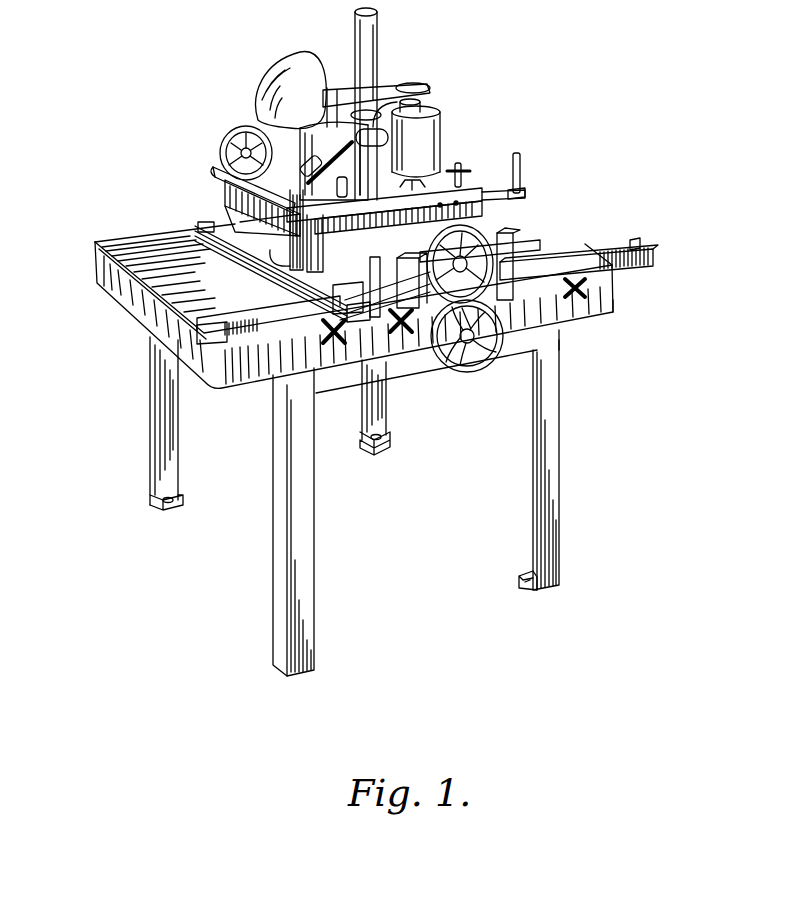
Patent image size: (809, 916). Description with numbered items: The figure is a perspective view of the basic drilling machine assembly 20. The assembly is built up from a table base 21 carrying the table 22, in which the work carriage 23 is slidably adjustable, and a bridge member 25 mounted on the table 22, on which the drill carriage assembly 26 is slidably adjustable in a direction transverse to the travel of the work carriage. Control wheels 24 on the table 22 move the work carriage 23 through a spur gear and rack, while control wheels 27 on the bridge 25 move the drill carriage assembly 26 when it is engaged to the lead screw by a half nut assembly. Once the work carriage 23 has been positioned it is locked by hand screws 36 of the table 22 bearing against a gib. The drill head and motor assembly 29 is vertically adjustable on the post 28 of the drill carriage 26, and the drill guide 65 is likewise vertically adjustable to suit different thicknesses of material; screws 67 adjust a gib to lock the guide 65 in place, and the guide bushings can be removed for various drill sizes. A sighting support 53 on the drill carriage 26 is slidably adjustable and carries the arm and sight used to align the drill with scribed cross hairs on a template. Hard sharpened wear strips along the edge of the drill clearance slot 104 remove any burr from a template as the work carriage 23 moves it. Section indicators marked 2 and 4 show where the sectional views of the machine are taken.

The section line 2- 2 is at (150, 226).
The section line 4- 4 is at (340, 287).
The drilling machine assembly 20 is at (571, 355).
The table base 21 is at (275, 434).
The table 22 is at (135, 298).
The work carriage 23 is at (655, 250).
The control wheels 24 is at (476, 370).
The bridge member 25 is at (215, 170).
The drill carriage assembly 26 is at (468, 185).
The control wheels 27 is at (238, 136).
The post 28 is at (380, 18).
The drill head and motor assembly 29 is at (286, 122).
The hand screws 36 is at (612, 286).
The sighting support 53 is at (528, 195).
The drill guide 65 is at (250, 260).
The screws 67 is at (322, 258).
The drill clearance slot 104 is at (204, 226).